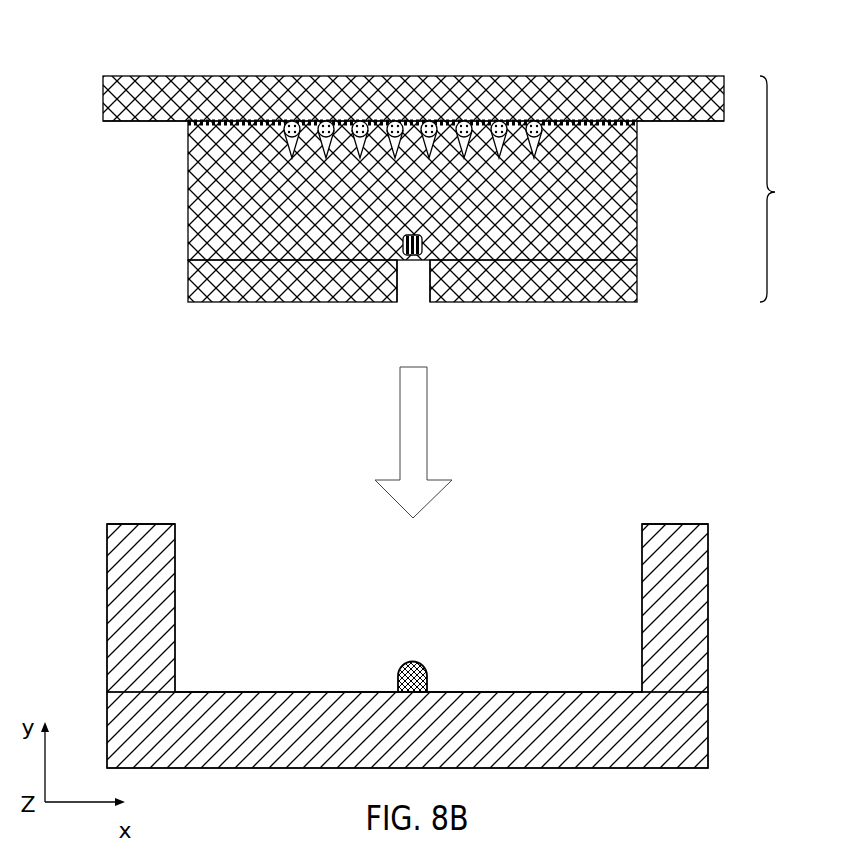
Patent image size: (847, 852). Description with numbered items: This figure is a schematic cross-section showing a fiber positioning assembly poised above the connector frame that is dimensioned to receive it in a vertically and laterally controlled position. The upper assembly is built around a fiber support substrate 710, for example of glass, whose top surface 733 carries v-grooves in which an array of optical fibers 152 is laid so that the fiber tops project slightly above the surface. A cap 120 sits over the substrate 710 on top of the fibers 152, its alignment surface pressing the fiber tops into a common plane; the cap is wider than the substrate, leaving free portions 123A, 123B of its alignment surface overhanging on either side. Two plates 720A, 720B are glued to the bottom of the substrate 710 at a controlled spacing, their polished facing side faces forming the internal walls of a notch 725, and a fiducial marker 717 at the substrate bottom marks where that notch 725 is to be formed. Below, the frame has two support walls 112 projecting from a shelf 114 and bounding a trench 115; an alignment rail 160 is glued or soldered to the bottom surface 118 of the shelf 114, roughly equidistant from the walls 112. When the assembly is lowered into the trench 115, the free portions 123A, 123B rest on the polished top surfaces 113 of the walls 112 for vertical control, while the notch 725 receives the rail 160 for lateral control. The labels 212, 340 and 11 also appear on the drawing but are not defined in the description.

The cap 120 is at (389, 109).
The adhesive layer 212 is at (588, 120).
The fiber support substrate 710 is at (388, 212).
The optical fibers 152 is at (357, 152).
The top surface 733 is at (497, 152).
The fiducial marker 717 is at (424, 243).
The plate 720A is at (279, 292).
The plate 720B is at (502, 292).
The notch 725 is at (411, 306).
The free portion of alignment surface 123A is at (139, 140).
The free portion of alignment surface 123B is at (681, 140).
The transfer assembly 340 is at (792, 189).
The receptacle 11 is at (369, 646).
The support walls 112 is at (121, 616).
The top surfaces 113 is at (144, 518).
The shelf 114 is at (404, 739).
The trench 115 is at (536, 524).
The bottom surface 118 is at (264, 687).
The alignment rail 160 is at (414, 657).